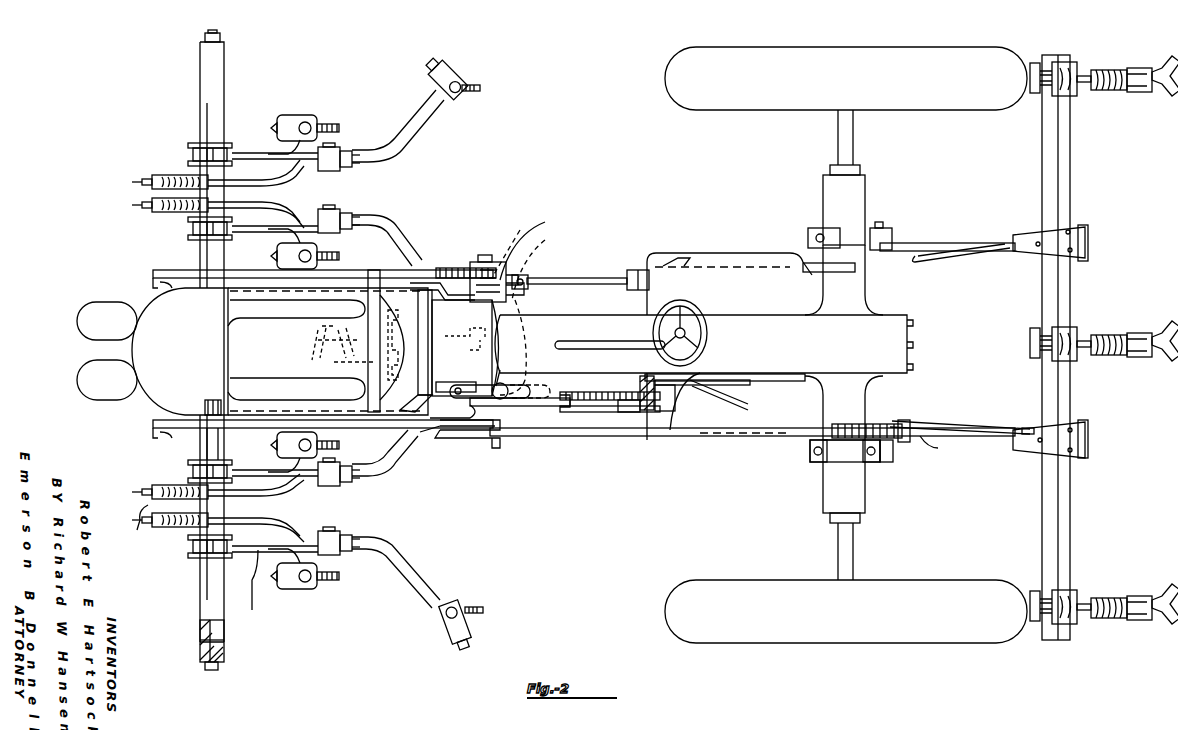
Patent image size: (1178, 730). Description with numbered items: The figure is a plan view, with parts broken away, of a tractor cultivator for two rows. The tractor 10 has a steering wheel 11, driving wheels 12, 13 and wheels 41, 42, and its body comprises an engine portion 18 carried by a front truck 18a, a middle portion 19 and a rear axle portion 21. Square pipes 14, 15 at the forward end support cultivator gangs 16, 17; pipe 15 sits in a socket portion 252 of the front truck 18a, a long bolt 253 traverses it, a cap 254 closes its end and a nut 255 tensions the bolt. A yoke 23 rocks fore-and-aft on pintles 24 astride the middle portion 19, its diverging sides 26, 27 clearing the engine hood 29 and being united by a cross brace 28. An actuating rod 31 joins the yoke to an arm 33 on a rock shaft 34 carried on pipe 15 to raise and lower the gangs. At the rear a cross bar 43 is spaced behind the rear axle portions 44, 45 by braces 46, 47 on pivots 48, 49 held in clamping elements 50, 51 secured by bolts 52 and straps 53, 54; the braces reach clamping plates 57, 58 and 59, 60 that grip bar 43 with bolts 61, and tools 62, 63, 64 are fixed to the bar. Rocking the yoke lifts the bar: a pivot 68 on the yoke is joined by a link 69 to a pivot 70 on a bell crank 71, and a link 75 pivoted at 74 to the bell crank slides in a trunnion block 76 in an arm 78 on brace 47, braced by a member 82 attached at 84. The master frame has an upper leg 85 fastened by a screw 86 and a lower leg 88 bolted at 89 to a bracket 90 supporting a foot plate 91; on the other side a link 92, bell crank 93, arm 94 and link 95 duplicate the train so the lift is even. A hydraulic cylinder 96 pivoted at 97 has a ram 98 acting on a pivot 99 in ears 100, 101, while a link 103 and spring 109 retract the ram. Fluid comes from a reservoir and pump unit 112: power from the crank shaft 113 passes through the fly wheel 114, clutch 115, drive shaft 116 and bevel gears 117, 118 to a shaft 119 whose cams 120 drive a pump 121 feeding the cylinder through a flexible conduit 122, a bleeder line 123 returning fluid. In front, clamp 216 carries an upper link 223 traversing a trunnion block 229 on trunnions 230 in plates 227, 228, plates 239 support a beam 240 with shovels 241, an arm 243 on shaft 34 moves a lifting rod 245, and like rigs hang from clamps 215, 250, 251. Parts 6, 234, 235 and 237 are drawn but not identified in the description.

The rack bar 6 is at (441, 266).
The tractor 10 is at (609, 280).
The steering wheel 11 is at (694, 318).
The driving wheel 12 is at (846, 78).
The driving wheel 13 is at (846, 611).
The square pipe 14 is at (198, 68).
The square pipe 15 is at (218, 504).
The cultivator gang 16 is at (404, 206).
The cultivator gang 17 is at (398, 484).
The engine portion 18 is at (328, 351).
The front truck 18a is at (180, 351).
The middle portion 19 is at (587, 322).
The rear axle portion 21 is at (910, 330).
The yoke member 23 is at (470, 272).
The pintle 24 is at (506, 268).
The side portion 26 is at (408, 286).
The side portion 27 is at (412, 404).
The cross brace 28 is at (420, 330).
The engine hood 29 is at (304, 407).
The actuating rod 31 is at (332, 270).
The arm 33 is at (158, 260).
The rock shaft 34 is at (205, 448).
The wheel 41 is at (107, 321).
The wheel 42 is at (107, 380).
The cross bar 43 is at (1070, 532).
The rear axle portion 44 is at (868, 172).
The rear axle portion 45 is at (866, 508).
The brace 46 is at (975, 245).
The brace 47 is at (990, 438).
The pivot 48 is at (885, 222).
The pivot 49 is at (890, 466).
The clamping element 50 is at (874, 228).
The clamping element 51 is at (899, 460).
The bolt 52 is at (812, 228).
The strap 53 is at (832, 228).
The strap 54 is at (846, 462).
The clamping plate 57 is at (1078, 230).
The clamping plate 58 is at (1088, 226).
The clamping plate 59 is at (1078, 428).
The clamping plate 60 is at (1089, 440).
The bolt 61 is at (1073, 246).
The cultivating tool 62 is at (1106, 75).
The cultivating tool 63 is at (1106, 340).
The cultivating tool 64 is at (1104, 603).
The pivot 68 is at (454, 430).
The link 69 is at (592, 412).
The pivot 70 is at (630, 414).
The bell crank 71 is at (649, 440).
The pivot 74 is at (673, 436).
The link 75 is at (798, 426).
The trunnion block 76 is at (892, 422).
The bifurcated arm 78 is at (930, 446).
The bracing member 82 is at (962, 425).
The attachment point 84 is at (1026, 428).
The upper leg 85 is at (695, 380).
The screw 86 is at (746, 386).
The lower leg 88 is at (722, 392).
The bolt 89 is at (642, 392).
The bracket 90 is at (640, 378).
The foot plate 91 is at (738, 262).
The link 92 is at (560, 278).
The bell crank 93 is at (638, 269).
The arm 94 is at (932, 258).
The link 95 is at (836, 269).
The hydraulic cylinder 96 is at (500, 390).
The pivot 97 is at (562, 406).
The ram 98 is at (470, 419).
The pivot 99 is at (448, 382).
The ear 100 is at (460, 388).
The ear 101 is at (458, 420).
The link 103 is at (536, 406).
The spring 109 is at (610, 387).
The reservoir and pump unit 112 is at (534, 245).
The crank shaft 113 is at (318, 334).
The fly wheel 114 is at (368, 303).
The clutch 115 is at (360, 363).
The drive shaft 116 is at (465, 348).
The bevel gear 117 is at (486, 350).
The bevel gear 118 is at (465, 338).
The shaft 119 is at (517, 240).
The cam member 120 is at (536, 236).
The pump 121 is at (527, 273).
The flexible conduit 122 is at (516, 327).
The bleeder line 123 is at (506, 371).
The clamp 215 is at (184, 470).
The clamp 216 is at (182, 550).
The upper parallel link 223 is at (262, 591).
The plate 227 is at (350, 552).
The plate 228 is at (353, 535).
The trunnion block 229 is at (336, 533).
The trunnion 230 is at (343, 562).
The arm 234 is at (420, 592).
The head 235 is at (458, 600).
The clevis 237 is at (278, 566).
The plate 239 is at (342, 478).
The beam 240 is at (392, 458).
The shovel 241 is at (357, 442).
The arm 243 is at (160, 531).
The lifting rod 245 is at (270, 537).
The clamp 250 is at (184, 150).
The clamp 251 is at (184, 226).
The socket portion 252 is at (207, 404).
The long bolt 253 is at (222, 635).
The cap 254 is at (224, 660).
The nut 255 is at (218, 668).